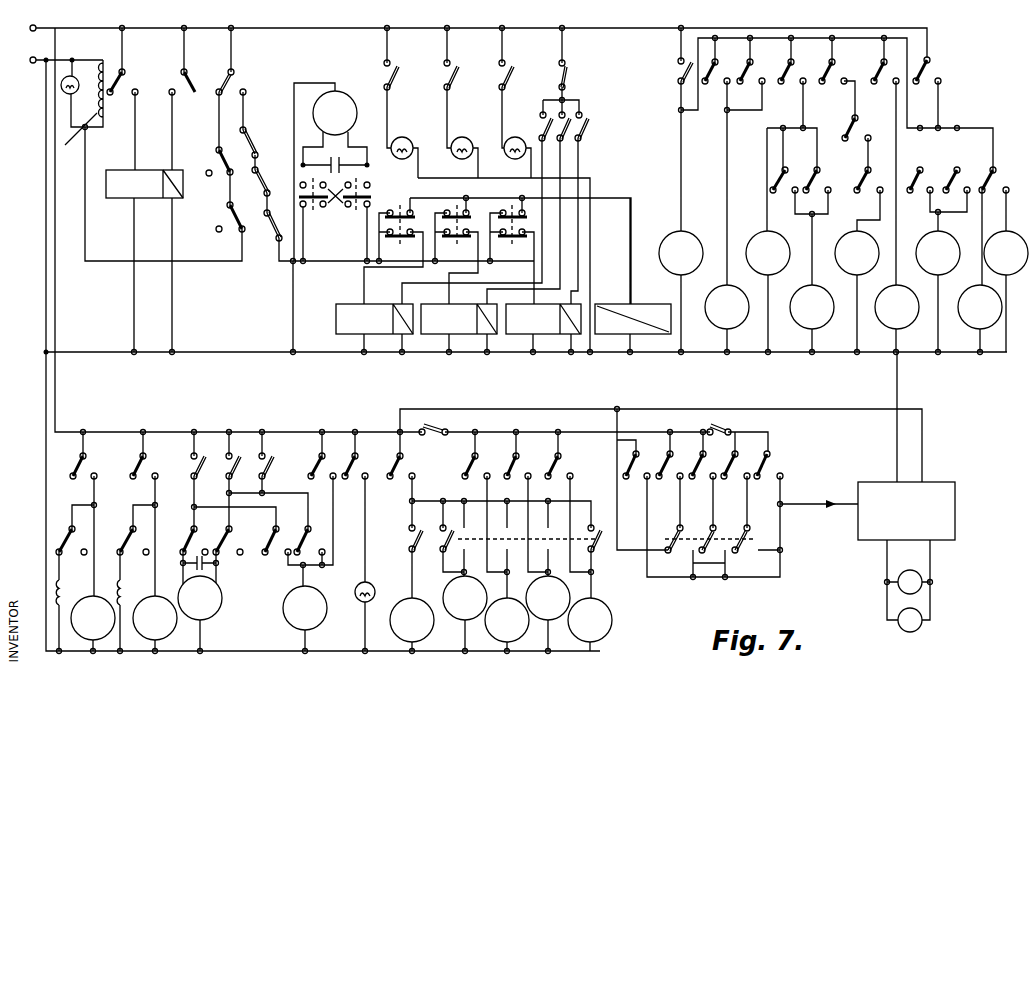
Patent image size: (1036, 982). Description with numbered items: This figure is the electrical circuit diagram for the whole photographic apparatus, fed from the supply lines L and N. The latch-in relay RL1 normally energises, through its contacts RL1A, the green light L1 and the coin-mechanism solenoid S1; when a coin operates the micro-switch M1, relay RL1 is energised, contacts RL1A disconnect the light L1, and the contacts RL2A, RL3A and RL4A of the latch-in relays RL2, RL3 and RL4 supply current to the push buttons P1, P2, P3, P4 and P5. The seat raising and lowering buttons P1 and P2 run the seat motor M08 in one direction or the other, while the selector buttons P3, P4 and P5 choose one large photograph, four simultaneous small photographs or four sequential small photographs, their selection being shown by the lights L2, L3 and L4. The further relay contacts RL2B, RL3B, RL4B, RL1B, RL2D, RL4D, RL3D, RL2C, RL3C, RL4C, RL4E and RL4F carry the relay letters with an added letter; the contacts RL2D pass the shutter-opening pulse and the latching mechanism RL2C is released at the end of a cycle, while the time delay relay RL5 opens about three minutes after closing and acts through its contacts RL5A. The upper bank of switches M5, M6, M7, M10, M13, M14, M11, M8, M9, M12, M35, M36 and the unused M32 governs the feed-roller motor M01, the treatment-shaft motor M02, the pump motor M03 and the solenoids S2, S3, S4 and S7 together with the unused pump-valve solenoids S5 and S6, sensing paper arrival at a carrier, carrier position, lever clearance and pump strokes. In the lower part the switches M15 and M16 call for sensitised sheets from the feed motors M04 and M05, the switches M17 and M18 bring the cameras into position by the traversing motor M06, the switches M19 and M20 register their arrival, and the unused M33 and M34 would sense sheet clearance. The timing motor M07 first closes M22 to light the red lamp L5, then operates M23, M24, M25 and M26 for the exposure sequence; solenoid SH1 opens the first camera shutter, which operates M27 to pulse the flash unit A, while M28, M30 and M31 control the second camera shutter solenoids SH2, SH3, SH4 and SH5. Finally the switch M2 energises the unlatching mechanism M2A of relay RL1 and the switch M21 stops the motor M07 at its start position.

The line terminal L is at (34, 16).
The neutral terminal N is at (32, 70).
The green light L1 is at (76, 78).
The solenoid S1 is at (74, 140).
The latch-in relay RL1 is at (144, 184).
The coin-operated micro-switch M1 is at (124, 70).
The micro-switch M2 is at (187, 70).
The unlatching mechanism M2A is at (186, 198).
The contacts of relay RL1 RL1A is at (232, 70).
The contacts of relay RL2 RL2A is at (257, 128).
The contacts of relay RL3 RL3A is at (262, 200).
The contacts of relay RL4 RL4A is at (275, 243).
The seat motor M08 is at (335, 90).
The seat raising switch P1 is at (315, 219).
The seat lowering switch P2 is at (349, 219).
The selector switch P3 is at (397, 229).
The selector switch P4 is at (453, 229).
The selector switch P5 is at (508, 229).
The latch-in relay RL2 is at (374, 319).
The latch-in relay RL3 is at (459, 319).
The latch-in relay RL4 is at (543, 319).
The time delay relay RL5 is at (623, 306).
The contacts of relay RL2 RL2B is at (412, 56).
The contacts of relay RL3 RL3B is at (472, 56).
The contacts of relay RL4 RL4B is at (530, 56).
The contacts of relay RL1 RL1B is at (590, 56).
The contacts of relay RL2 RL2D is at (544, 110).
The contacts of relay RL4 RL4D is at (570, 130).
The contacts of relay RL3 RL3D is at (575, 140).
The light L2 is at (420, 120).
The light L3 is at (466, 138).
The light L4 is at (519, 138).
The contacts of relay RL5 RL5A is at (672, 78).
The micro-switch M5 is at (712, 58).
The micro-switch M6 is at (746, 58).
The switch M7 is at (788, 58).
The micro-switch M10 is at (829, 58).
The switch M13 is at (881, 58).
The switch M14 is at (930, 63).
The micro-switch M11 is at (853, 130).
The micro-switch M8 is at (780, 178).
The micro-switch M9 is at (813, 180).
The switch M12 is at (863, 178).
The switch M35 is at (918, 160).
The switch M36 is at (955, 160).
The switch M32 is at (996, 178).
The feed roller motor M01 is at (681, 253).
The solenoid S7 is at (768, 253).
The solenoid S4 is at (857, 253).
The pump motor M03 is at (933, 268).
The solenoid S6 is at (1006, 253).
The solenoid S2 is at (727, 307).
The solenoid S3 is at (812, 307).
The treatment drive motor M02 is at (890, 322).
The solenoid S5 is at (980, 307).
The switch M15 is at (80, 452).
The switch M16 is at (140, 452).
The latching mechanism of relay RL2 RL2C is at (192, 452).
The contacts of relay RL3 RL3C is at (226, 452).
The contacts of relay RL4 RL4C is at (260, 452).
The switch M21 is at (320, 452).
The switch M22 is at (352, 452).
The switch M23 is at (398, 452).
The contacts of relay RL4 RL4F is at (432, 422).
The switch M24 is at (472, 452).
The switch M25 is at (514, 452).
The switch M26 is at (556, 452).
The switch M27 is at (634, 450).
The switch M28 is at (668, 450).
The contacts of relay RL4 RL4E is at (722, 425).
The switch M30 is at (738, 458).
The switch M31 is at (769, 466).
The switch M33 is at (66, 518).
The switch M34 is at (123, 518).
The switch M17 is at (186, 538).
The switch M18 is at (233, 548).
The switch M19 is at (272, 556).
The switch M20 is at (310, 548).
The red light L5 is at (356, 586).
The sheet feed motor M04 is at (87, 628).
The sheet feed motor M05 is at (150, 628).
The camera traversing motor M06 is at (212, 610).
The timing motor M07 is at (300, 625).
The shutter solenoid SH1 is at (406, 630).
The shutter solenoid SH2 is at (460, 612).
The shutter solenoid SH3 is at (500, 630).
The shutter solenoid SH4 is at (545, 612).
The shutter solenoid SH5 is at (600, 630).
The flash unit A is at (906, 557).